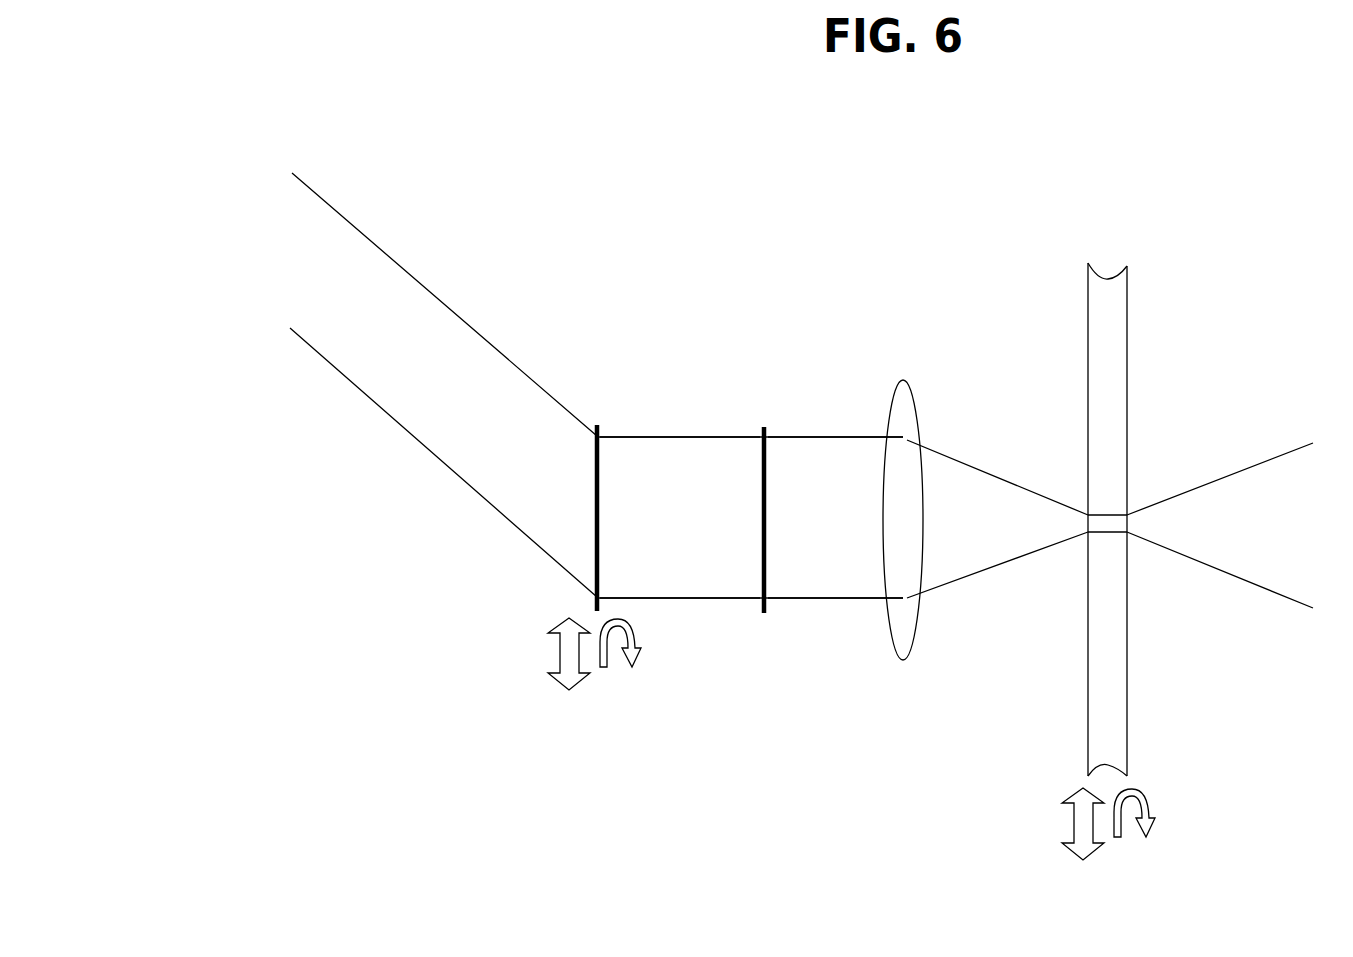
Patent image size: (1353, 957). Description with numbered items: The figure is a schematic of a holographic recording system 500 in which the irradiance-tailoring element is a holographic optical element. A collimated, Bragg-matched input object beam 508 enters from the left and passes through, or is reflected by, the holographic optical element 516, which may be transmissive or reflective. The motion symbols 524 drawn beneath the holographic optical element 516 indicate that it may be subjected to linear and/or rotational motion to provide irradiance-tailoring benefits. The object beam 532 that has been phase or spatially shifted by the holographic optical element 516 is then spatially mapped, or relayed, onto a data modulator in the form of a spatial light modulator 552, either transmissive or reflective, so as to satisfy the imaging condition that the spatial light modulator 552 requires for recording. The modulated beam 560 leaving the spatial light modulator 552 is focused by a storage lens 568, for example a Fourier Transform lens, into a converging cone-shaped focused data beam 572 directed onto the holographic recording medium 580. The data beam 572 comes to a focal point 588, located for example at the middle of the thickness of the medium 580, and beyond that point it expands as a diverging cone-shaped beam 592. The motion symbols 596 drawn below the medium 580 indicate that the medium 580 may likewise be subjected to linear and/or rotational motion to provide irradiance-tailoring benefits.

The holographic recording system 500 is at (288, 543).
The input object beam 508 is at (437, 488).
The holographic optical element 516 is at (597, 427).
The motion symbols 524 is at (590, 718).
The object beam 532 is at (671, 390).
The spatial light modulator 552 is at (765, 427).
The modulated beam 560 is at (817, 398).
The storage lens 568 is at (897, 660).
The focused data beam 572 is at (993, 448).
The holographic recording medium 580 is at (1103, 383).
The focal point 588 is at (1108, 520).
The diverging cone-shaped beam 592 is at (1250, 437).
The motion symbols 596 is at (1065, 778).